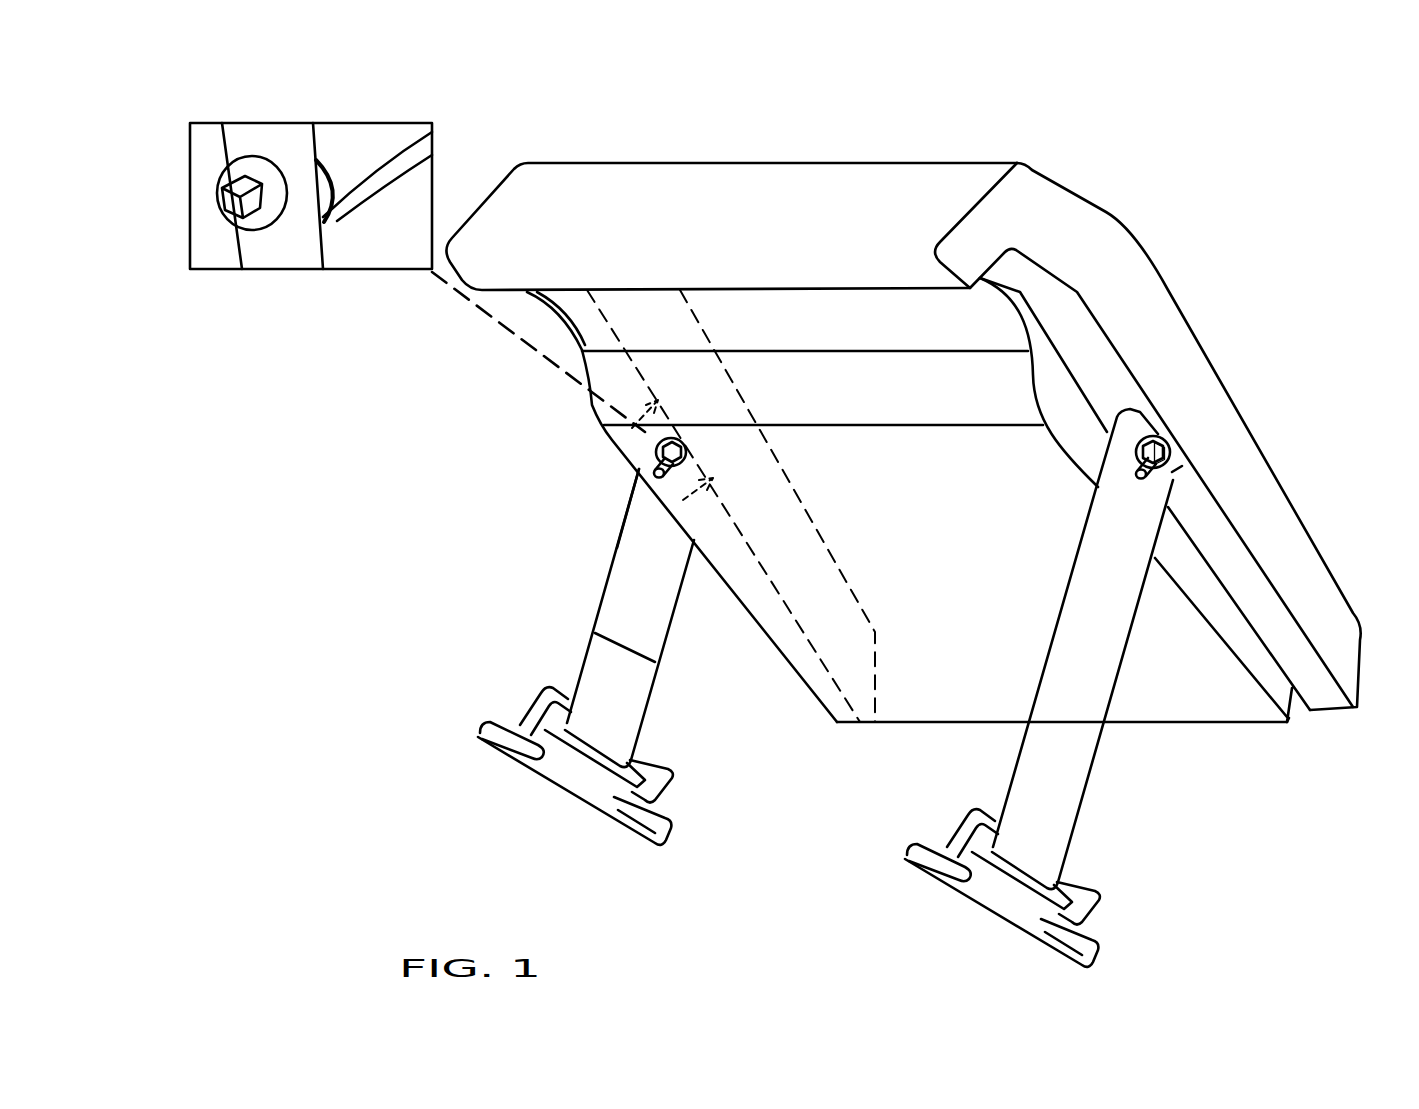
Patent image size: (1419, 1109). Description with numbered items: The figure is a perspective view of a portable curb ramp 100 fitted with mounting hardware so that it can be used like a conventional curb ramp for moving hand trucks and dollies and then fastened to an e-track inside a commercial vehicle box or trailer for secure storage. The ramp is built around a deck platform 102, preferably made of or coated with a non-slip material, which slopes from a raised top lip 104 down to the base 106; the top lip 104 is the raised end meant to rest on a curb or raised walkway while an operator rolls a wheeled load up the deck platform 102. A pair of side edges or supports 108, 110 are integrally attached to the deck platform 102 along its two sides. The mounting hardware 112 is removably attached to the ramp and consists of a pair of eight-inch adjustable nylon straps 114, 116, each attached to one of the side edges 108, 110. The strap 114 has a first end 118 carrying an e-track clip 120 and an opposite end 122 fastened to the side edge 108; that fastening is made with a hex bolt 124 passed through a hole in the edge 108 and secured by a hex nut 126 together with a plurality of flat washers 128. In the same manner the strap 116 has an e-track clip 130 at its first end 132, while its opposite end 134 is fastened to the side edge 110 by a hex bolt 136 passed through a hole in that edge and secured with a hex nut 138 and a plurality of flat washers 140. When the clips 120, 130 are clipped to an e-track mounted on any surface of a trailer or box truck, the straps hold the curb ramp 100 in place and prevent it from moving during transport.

The curb ramp 100 is at (465, 460).
The deck platform 102 is at (1110, 216).
The top lip 104 is at (795, 192).
The base 106 is at (1283, 713).
The side edge 108 is at (1240, 488).
The side edge 110 is at (603, 431).
The mounting hardware 112 is at (462, 598).
The strap 114 is at (1093, 755).
The strap 116 is at (657, 587).
The first end 118 is at (1047, 852).
The e-track clip 120 is at (983, 895).
The opposite end 122 is at (1178, 470).
The hex bolt 124 is at (1143, 473).
The hex nut 126 is at (1157, 435).
The flat washers 128 is at (1162, 438).
The e-track clip 130 is at (553, 772).
The first end 132 is at (595, 692).
The opposite end 134 is at (643, 497).
The hex bolt 136 is at (230, 203).
The hex nut 138 is at (315, 157).
The flat washers 140 is at (230, 167).